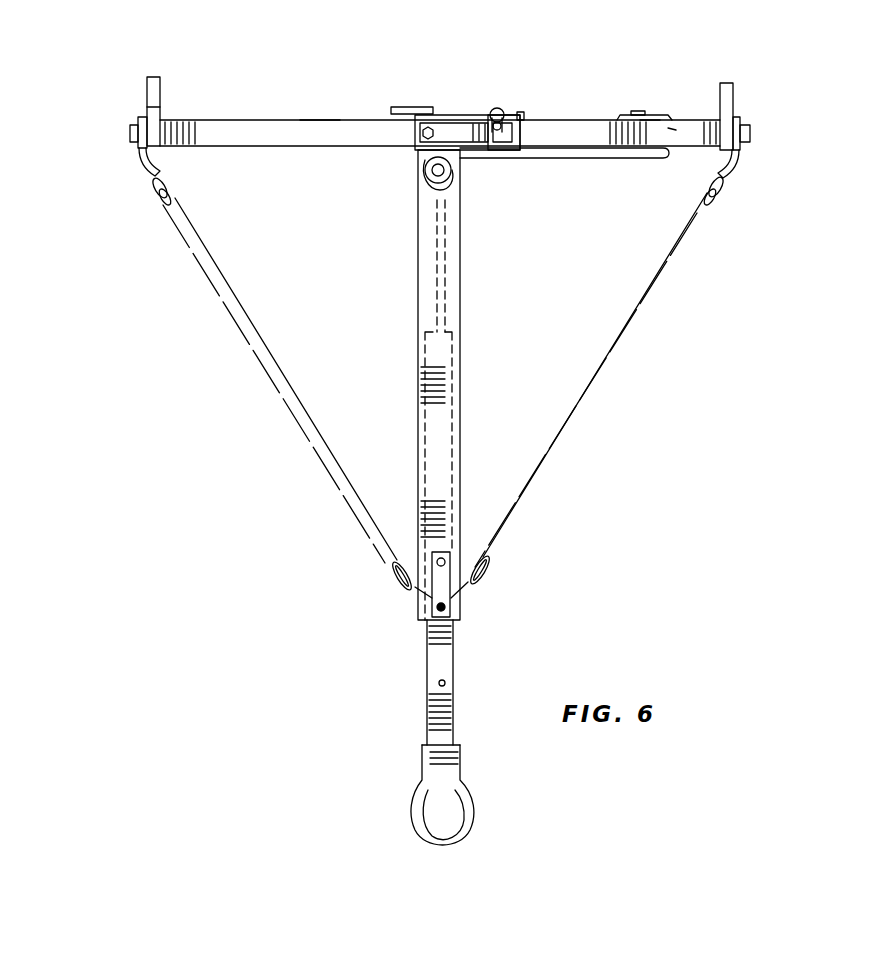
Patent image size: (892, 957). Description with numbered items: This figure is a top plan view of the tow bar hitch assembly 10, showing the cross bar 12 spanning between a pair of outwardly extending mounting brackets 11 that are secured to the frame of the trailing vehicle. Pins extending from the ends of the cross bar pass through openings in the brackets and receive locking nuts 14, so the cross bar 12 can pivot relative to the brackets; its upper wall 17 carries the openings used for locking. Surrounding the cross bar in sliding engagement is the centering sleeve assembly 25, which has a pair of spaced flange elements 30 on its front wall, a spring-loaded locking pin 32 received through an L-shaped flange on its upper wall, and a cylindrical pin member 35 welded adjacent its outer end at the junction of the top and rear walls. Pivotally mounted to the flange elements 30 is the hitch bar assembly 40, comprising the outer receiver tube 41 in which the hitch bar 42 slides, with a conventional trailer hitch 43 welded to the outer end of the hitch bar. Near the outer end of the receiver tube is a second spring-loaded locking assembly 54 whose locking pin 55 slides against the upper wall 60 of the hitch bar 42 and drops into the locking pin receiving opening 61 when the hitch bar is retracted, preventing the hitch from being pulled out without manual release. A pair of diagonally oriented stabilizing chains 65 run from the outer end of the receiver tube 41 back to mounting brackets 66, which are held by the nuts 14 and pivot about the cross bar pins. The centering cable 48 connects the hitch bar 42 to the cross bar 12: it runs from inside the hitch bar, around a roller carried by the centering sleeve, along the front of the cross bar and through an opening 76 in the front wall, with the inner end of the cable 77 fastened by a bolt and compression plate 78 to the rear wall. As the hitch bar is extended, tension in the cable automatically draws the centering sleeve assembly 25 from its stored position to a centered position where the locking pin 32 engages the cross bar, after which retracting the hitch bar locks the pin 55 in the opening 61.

The tow bar hitch assembly 10 is at (376, 91).
The mounting brackets 11 is at (146, 90).
The cross bar 12 is at (253, 121).
The locking nut 14 is at (130, 133).
The upper wall 17 is at (318, 120).
The centering sleeve assembly 25 is at (468, 114).
The flange elements 30 is at (415, 157).
The spring-loaded locking pin 32 is at (505, 110).
The cylindrical pin member 35 is at (420, 107).
The hitch bar assembly 40 is at (436, 497).
The outer receiver tube 41 is at (418, 240).
The hitch bar 42 is at (414, 683).
The trailer hitch 43 is at (442, 778).
The centering cable 48 is at (550, 160).
The second spring-loaded locking assembly 54 is at (420, 592).
The locking pin 55 is at (446, 607).
The upper wall 60 is at (427, 722).
The locking pin receiving opening 61 is at (425, 653).
The stabilizing chains 65 is at (492, 562).
The mounting brackets 66 is at (137, 157).
The opening 76 is at (675, 130).
The inner end of the cable 77 is at (655, 118).
The bolt and compression plate 78 is at (632, 111).